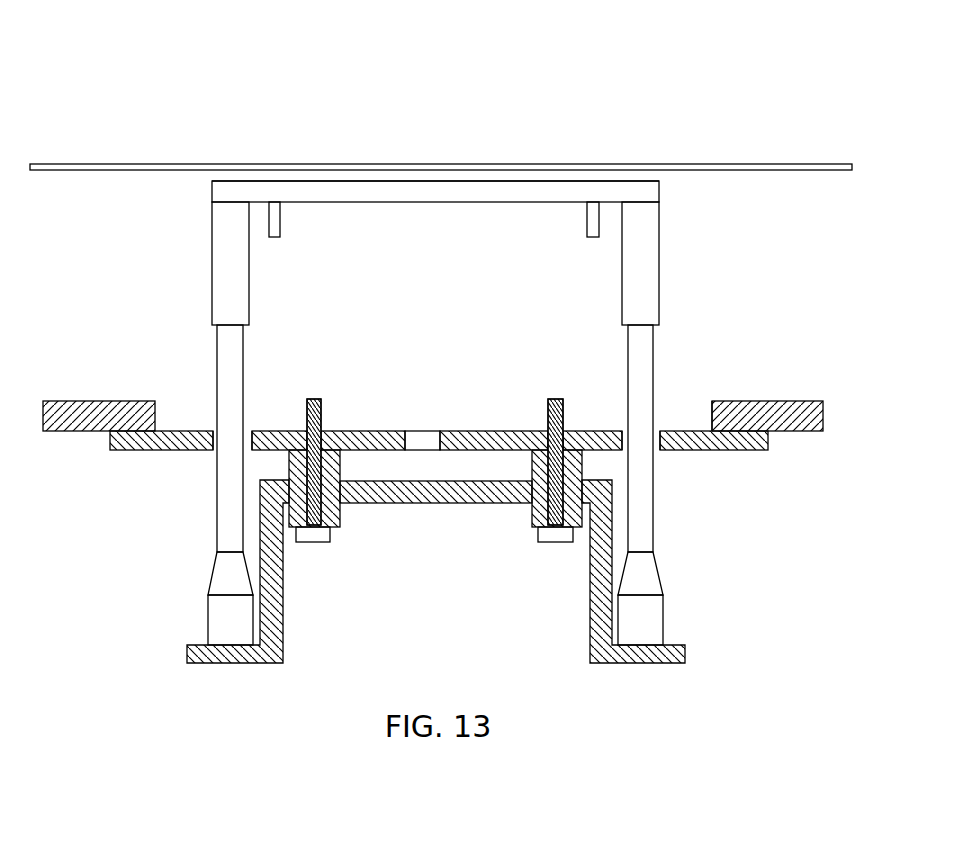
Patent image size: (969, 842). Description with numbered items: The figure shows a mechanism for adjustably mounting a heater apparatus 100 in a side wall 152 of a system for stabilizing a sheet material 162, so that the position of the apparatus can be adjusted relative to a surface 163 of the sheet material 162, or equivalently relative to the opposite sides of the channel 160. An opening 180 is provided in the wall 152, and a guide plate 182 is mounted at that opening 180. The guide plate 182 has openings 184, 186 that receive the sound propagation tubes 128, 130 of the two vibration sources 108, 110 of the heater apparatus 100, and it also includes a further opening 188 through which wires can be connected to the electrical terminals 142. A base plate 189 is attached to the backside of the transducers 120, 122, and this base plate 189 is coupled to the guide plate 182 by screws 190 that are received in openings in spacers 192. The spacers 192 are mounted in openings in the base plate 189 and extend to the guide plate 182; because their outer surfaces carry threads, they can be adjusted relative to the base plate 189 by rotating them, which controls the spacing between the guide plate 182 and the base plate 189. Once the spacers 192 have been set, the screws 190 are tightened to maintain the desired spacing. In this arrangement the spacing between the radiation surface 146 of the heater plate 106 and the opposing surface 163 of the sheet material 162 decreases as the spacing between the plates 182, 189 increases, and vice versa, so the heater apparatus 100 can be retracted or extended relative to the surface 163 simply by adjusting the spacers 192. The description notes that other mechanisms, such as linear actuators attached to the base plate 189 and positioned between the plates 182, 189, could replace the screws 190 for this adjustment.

The heater apparatus 100 is at (432, 170).
The heater plate 106 is at (318, 184).
The vibration source 108 is at (206, 264).
The vibration source 110 is at (667, 256).
The transducer 120 is at (217, 606).
The transducer 122 is at (654, 603).
The sound propagation tube 128 is at (233, 349).
The sound propagation tube 130 is at (635, 350).
The electrical terminals 142 is at (274, 222).
The radiation surface 146 is at (481, 182).
The side wall 152 is at (68, 399).
The channel 160 is at (813, 398).
The sheet material 162 is at (441, 159).
The surface of the sheet material 163 is at (100, 172).
The opening 180 is at (712, 412).
The guide plate 182 is at (441, 455).
The opening 184 is at (210, 430).
The opening 186 is at (621, 430).
The opening 188 is at (421, 437).
The base plate 189 is at (415, 493).
The screws 190 is at (313, 398).
The spacers 192 is at (330, 492).